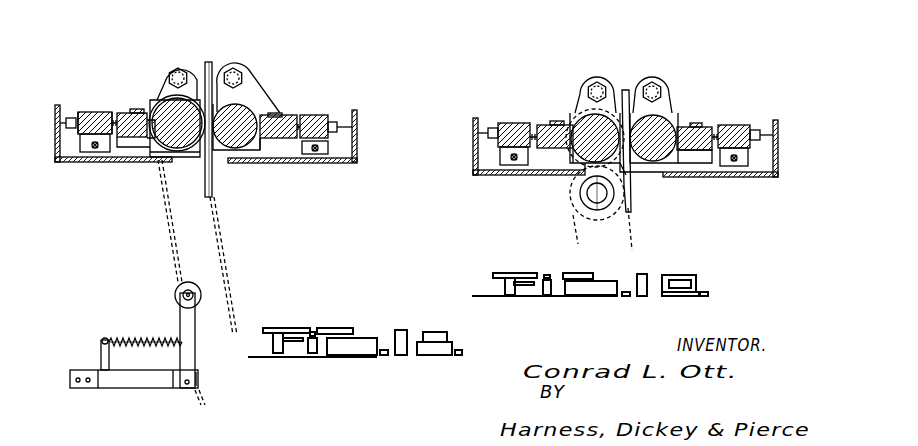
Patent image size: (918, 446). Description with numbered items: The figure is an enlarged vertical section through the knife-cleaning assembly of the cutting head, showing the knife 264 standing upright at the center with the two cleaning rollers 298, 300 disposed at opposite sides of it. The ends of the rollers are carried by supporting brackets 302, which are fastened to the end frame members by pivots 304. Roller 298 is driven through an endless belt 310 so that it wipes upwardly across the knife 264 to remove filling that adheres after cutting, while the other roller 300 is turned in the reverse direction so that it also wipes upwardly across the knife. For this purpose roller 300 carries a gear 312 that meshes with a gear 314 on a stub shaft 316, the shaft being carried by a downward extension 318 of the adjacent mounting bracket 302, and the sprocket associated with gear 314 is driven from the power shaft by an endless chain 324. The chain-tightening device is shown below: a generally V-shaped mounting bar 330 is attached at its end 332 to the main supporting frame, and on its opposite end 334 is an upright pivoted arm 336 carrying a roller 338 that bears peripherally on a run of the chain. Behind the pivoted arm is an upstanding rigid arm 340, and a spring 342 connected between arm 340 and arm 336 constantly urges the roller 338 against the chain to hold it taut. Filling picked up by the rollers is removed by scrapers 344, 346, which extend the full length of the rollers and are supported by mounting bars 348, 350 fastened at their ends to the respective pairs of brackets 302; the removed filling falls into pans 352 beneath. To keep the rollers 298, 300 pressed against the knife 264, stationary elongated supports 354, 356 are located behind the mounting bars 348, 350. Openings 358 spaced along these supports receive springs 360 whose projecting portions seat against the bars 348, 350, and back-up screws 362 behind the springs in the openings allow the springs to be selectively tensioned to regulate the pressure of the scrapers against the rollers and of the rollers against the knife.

In FIG. 18, the knife 264 is at (212, 64).
In FIG. 19, the knife 264 is at (628, 90).
In FIG. 18, the cleaning roller 298 is at (172, 105).
In FIG. 19, the cleaning roller 298 is at (665, 122).
In FIG. 18, the cleaning roller 300 is at (268, 115).
In FIG. 19, the cleaning roller 300 is at (560, 125).
In FIG. 18, the supporting bracket 302 is at (175, 70).
In FIG. 19, the supporting bracket 302 is at (590, 88).
In FIG. 18, the pivot 304 is at (178, 70).
In FIG. 19, the pivot 304 is at (623, 95).
In FIG. 18, the endless belt 310 is at (217, 214).
In FIG. 19, the gear 312 is at (572, 168).
In FIG. 19, the gear 314 is at (568, 218).
In FIG. 19, the stub shaft 316 is at (600, 198).
In FIG. 19, the downward extension 318 is at (605, 170).
In FIG. 19, the endless chain 324 is at (574, 251).
In FIG. 18, the mounting bar 330 is at (133, 388).
In FIG. 18, the end of mounting bar 332 is at (88, 370).
In FIG. 18, the opposite end of mounting bar 334 is at (199, 382).
In FIG. 18, the pivoted arm 336 is at (190, 320).
In FIG. 18, the roller 338 is at (200, 293).
In FIG. 18, the rigid arm 340 is at (104, 340).
In FIG. 18, the spring 342 is at (147, 340).
In FIG. 18, the scraper 344 is at (136, 112).
In FIG. 19, the scraper 344 is at (700, 127).
In FIG. 18, the scraper 346 is at (282, 115).
In FIG. 19, the scraper 346 is at (555, 121).
In FIG. 18, the mounting bar 348 is at (140, 137).
In FIG. 18, the mounting bar 350 is at (288, 140).
In FIG. 18, the pan 352 is at (57, 112).
In FIG. 19, the pan 352 is at (475, 160).
In FIG. 18, the elongated support 354 is at (82, 112).
In FIG. 19, the elongated support 354 is at (740, 125).
In FIG. 18, the elongated support 356 is at (324, 115).
In FIG. 19, the elongated support 356 is at (505, 123).
In FIG. 18, the opening 358 is at (85, 152).
In FIG. 18, the spring 360 is at (115, 118).
In FIG. 18, the back-up screw 362 is at (70, 126).
In FIG. 19, the back-up screw 362 is at (488, 133).